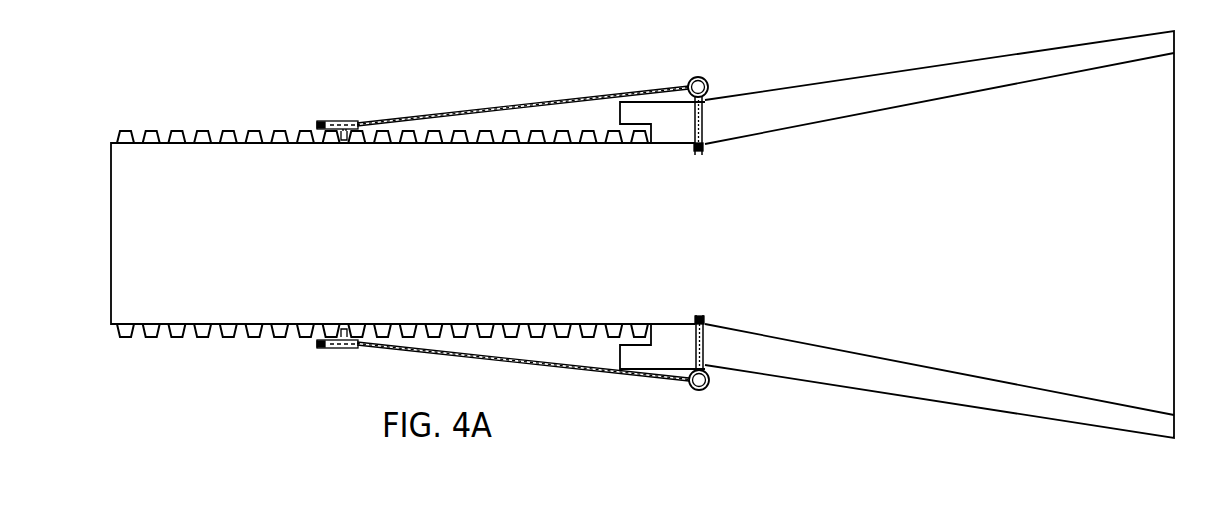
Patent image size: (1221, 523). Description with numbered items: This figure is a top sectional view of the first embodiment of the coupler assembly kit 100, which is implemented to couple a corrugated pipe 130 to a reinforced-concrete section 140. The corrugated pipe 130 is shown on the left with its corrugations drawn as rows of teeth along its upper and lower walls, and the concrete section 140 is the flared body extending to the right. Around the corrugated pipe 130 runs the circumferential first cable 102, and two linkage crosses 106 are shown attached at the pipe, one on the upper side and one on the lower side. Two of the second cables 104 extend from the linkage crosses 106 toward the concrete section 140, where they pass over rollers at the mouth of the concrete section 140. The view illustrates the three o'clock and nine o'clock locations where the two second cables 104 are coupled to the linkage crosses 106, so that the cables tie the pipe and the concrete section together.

The coupler assembly kit 100 is at (208, 61).
The first cable 102 is at (345, 140).
The second cables 104 is at (447, 113).
The linkage crosses 106 is at (329, 123).
The corrugated pipe 130 is at (145, 132).
The concrete section 140 is at (1003, 412).